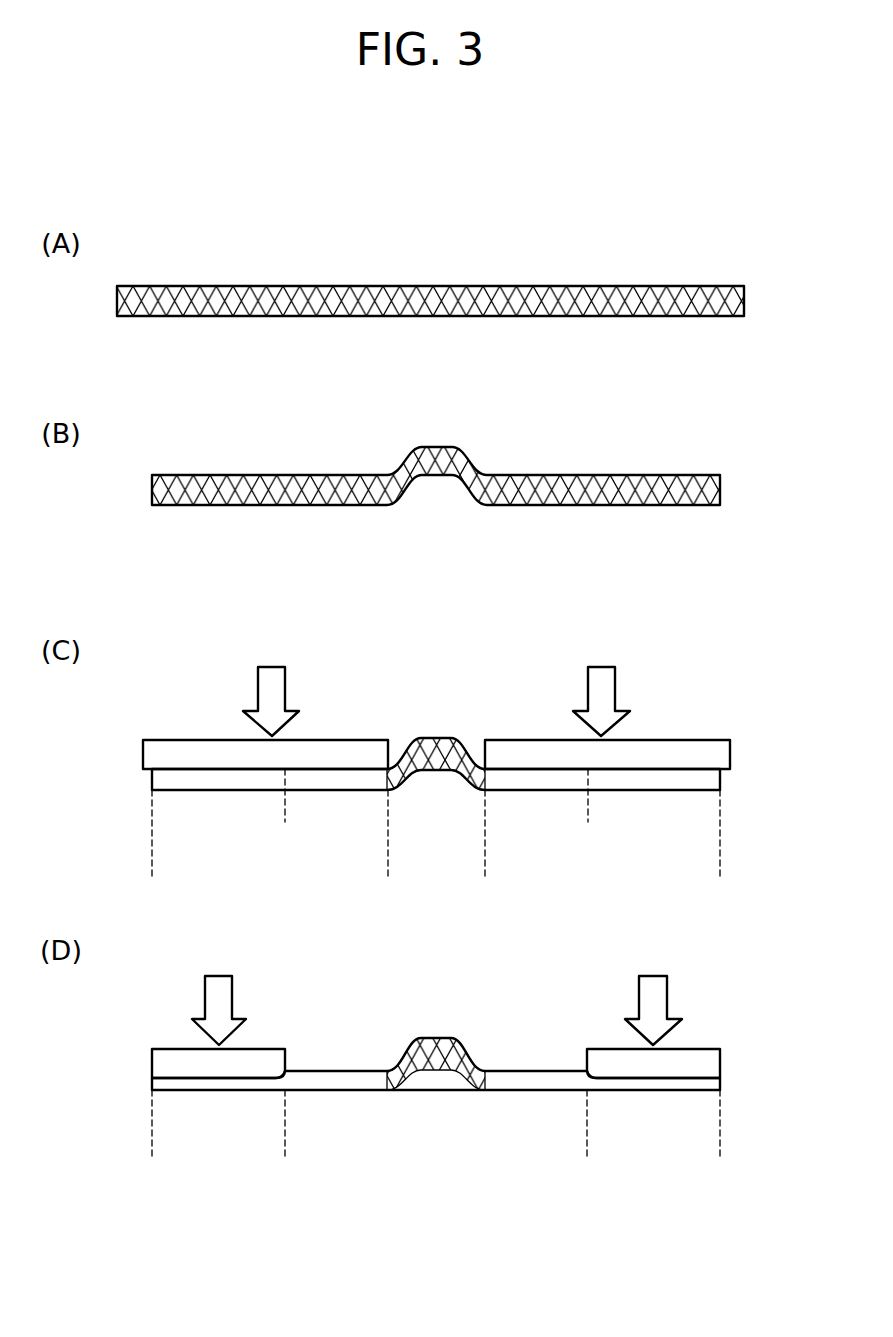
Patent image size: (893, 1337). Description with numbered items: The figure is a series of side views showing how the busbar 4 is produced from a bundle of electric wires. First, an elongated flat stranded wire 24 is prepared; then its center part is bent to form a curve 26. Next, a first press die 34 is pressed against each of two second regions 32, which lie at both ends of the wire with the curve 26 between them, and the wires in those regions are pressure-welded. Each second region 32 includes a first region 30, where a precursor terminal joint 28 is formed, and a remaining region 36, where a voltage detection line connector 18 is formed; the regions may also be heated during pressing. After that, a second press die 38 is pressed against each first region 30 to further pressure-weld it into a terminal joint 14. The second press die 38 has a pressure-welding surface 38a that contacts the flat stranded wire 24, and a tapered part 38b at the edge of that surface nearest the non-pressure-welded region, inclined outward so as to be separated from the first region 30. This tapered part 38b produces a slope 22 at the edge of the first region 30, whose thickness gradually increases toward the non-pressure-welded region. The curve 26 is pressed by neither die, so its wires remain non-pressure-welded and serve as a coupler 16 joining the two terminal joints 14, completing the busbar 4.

The flat stranded wire 24 is at (727, 317).
The curve 26 is at (487, 441).
The first press die 34 is at (163, 740).
The precursor terminal joint 28 is at (215, 782).
The voltage detection line connector 18 is at (330, 782).
The first region 30 is at (285, 809).
The remaining region 36 is at (285, 809).
The second region 32 is at (152, 865).
The busbar 4 is at (730, 1086).
The second press die 38 is at (162, 1046).
The terminal joint 14 is at (250, 1085).
The slope 22 is at (278, 1068).
The tapered part 38b is at (287, 1079).
The pressure-welding surface 38a is at (233, 1080).
The coupler 16 is at (467, 1090).